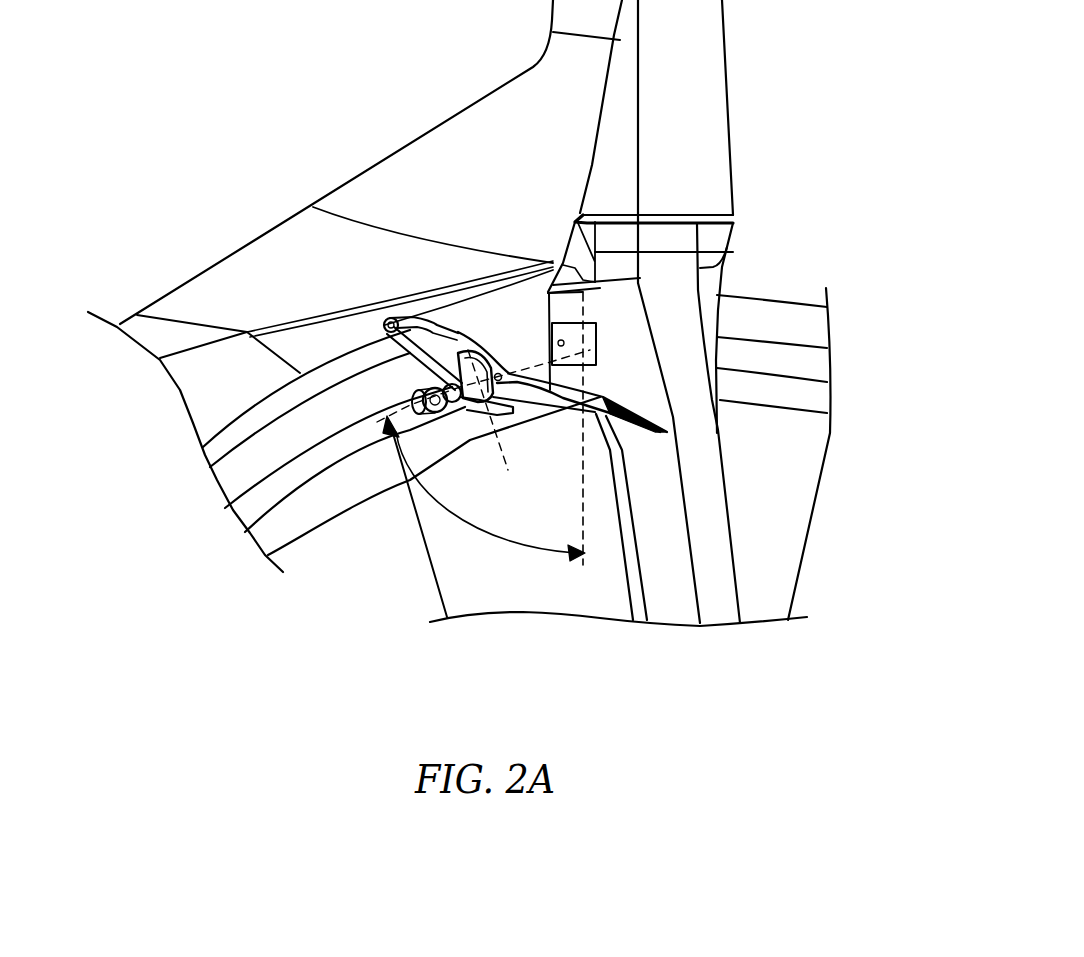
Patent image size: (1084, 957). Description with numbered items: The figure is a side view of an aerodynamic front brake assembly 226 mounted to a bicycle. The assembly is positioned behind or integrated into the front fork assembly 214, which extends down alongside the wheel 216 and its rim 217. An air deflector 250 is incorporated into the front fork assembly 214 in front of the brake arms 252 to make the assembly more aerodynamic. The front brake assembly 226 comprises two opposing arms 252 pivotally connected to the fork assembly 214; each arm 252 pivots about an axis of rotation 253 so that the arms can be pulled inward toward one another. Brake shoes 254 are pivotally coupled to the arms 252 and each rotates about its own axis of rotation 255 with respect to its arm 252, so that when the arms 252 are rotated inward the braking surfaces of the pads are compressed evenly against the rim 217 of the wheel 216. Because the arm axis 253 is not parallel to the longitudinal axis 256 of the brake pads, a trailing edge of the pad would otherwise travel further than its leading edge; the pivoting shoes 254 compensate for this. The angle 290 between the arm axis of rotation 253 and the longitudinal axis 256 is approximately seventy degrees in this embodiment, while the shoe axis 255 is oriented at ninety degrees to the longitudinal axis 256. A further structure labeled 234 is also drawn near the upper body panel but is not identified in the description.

The front fork assembly 214 is at (707, 557).
The wheel 216 is at (770, 310).
The rim 217 is at (318, 458).
The front brake assembly 226 is at (252, 275).
The hood edge 234 is at (348, 190).
The air deflector 250 is at (640, 367).
The arms 252 is at (520, 340).
The axis of rotation 253 is at (583, 442).
The brake shoes 254 is at (438, 420).
The axis of rotation 255 is at (447, 312).
The longitudinal axis 256 is at (410, 413).
The angle 290 is at (507, 540).